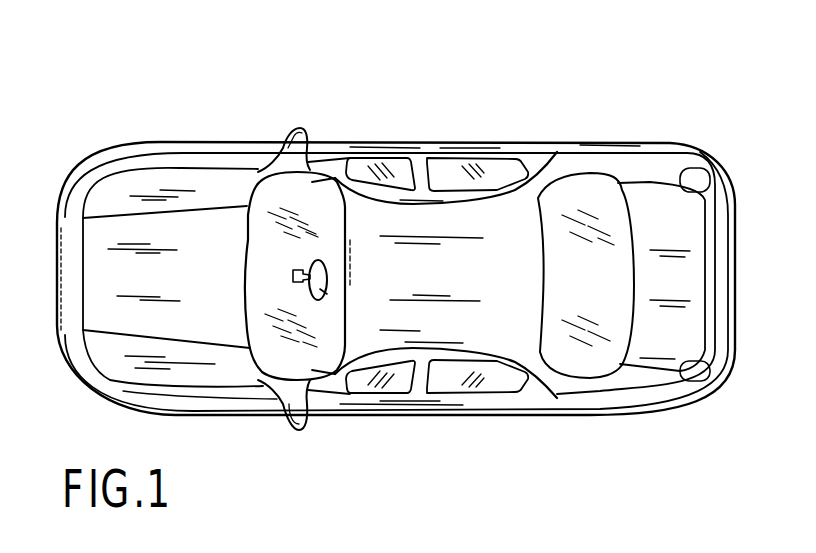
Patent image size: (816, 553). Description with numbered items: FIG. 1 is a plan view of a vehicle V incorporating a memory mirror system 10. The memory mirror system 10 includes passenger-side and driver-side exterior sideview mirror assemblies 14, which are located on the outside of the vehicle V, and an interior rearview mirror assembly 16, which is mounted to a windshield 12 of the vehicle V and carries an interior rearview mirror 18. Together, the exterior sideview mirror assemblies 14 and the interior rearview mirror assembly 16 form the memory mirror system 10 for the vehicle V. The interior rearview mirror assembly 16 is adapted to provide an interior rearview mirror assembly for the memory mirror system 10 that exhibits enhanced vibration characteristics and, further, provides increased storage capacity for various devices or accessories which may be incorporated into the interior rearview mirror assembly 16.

The memory mirror system 10 is at (329, 458).
The windshield 12 is at (282, 291).
The exterior sideview mirror assemblies 14 is at (289, 132).
The interior rearview mirror assembly 16 is at (323, 290).
The interior rearview mirror 18 is at (324, 258).
The vehicle V is at (583, 440).